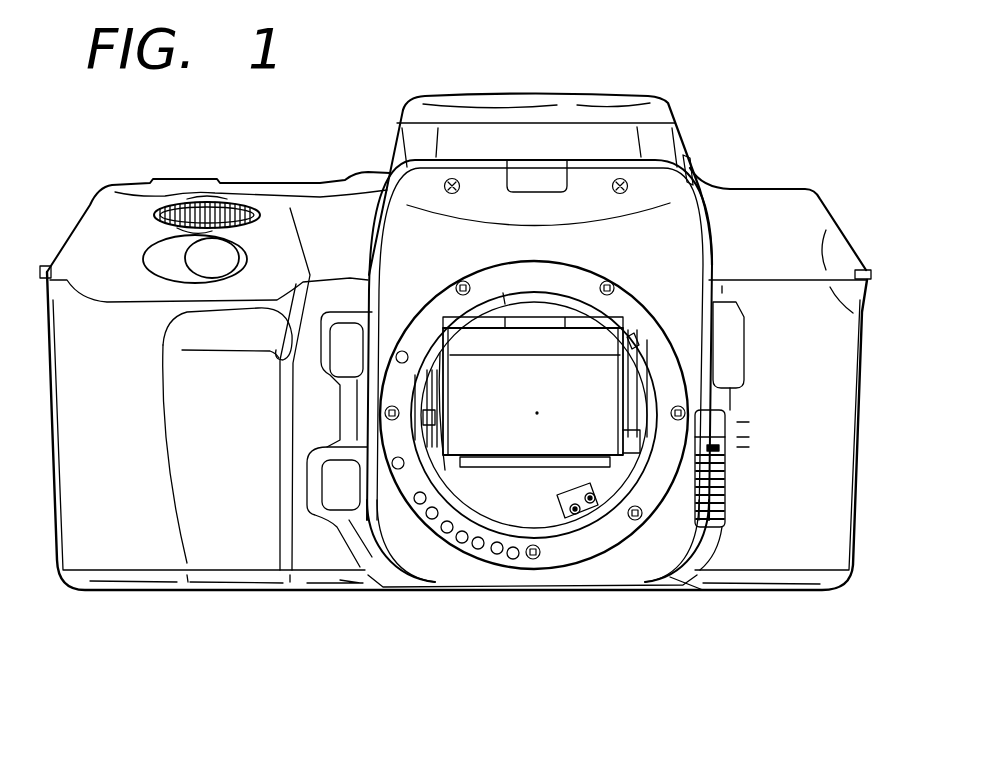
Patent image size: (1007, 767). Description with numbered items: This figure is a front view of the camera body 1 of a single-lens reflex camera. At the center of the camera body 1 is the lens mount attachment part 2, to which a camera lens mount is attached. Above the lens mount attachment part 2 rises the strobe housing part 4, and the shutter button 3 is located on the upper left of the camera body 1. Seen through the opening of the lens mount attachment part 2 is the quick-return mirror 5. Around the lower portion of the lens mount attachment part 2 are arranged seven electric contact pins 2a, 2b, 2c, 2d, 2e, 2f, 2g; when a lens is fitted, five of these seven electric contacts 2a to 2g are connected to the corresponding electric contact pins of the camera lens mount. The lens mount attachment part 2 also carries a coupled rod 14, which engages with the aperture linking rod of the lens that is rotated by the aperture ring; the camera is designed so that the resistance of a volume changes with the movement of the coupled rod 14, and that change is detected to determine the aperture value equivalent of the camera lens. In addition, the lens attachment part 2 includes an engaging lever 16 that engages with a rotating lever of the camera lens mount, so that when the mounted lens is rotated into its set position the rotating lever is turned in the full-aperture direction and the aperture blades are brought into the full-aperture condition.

The camera body 1 is at (742, 154).
The lens mount attachment part 2 is at (628, 535).
The electric contact pin 2a is at (514, 559).
The electric contact pin 2b is at (496, 555).
The electric contact pin 2c is at (478, 549).
The electric contact pin 2d is at (461, 538).
The electric contact pin 2e is at (445, 528).
The electric contact pin 2f is at (430, 514).
The electric contact pin 2g is at (414, 495).
The shutter button 3 is at (190, 268).
The strobe housing part 4 is at (613, 98).
The quick-return mirror 5 is at (605, 402).
The coupled rod 14 is at (640, 340).
The engaging lever 16 is at (423, 427).